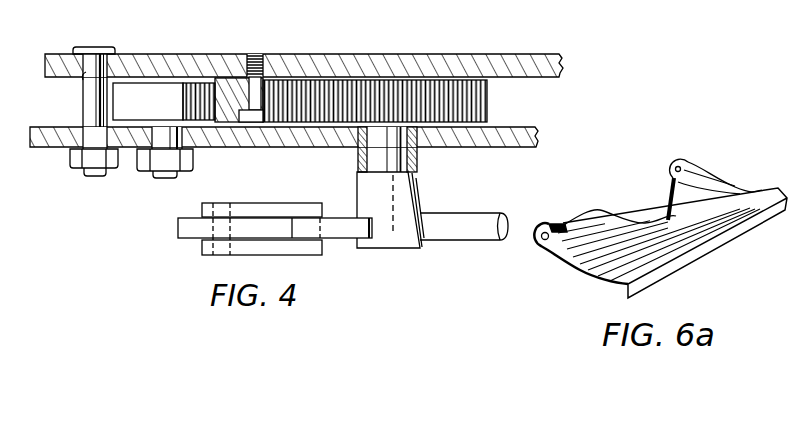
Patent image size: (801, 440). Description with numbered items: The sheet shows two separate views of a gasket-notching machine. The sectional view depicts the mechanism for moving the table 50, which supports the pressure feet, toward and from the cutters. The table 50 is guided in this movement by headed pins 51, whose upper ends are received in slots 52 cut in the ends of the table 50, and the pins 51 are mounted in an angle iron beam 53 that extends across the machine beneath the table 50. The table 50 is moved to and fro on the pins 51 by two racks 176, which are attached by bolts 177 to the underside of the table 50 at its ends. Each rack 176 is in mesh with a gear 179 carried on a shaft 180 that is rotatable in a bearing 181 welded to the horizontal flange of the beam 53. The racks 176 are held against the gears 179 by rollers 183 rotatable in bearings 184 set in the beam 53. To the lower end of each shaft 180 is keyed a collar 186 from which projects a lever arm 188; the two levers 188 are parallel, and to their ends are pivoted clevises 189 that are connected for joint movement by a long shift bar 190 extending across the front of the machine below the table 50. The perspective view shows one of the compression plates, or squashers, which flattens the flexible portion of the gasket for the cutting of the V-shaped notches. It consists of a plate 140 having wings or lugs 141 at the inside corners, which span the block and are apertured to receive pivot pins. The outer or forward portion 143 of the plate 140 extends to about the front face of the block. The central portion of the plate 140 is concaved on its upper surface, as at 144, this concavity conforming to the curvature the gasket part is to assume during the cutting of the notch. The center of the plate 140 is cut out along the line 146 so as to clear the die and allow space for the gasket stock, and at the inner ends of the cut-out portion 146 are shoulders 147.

In FIG. 4, the table 50 is at (474, 53).
In FIG. 4, the headed pins 51 is at (100, 52).
In FIG. 4, the slots 52 is at (86, 72).
In FIG. 4, the angle iron beam 53 is at (270, 142).
In FIG. 4, the racks 176 is at (230, 88).
In FIG. 4, the bolts 177 is at (252, 56).
In FIG. 4, the gear 179 is at (485, 107).
In FIG. 4, the shaft 180 is at (397, 160).
In FIG. 4, the bearing 181 is at (357, 157).
In FIG. 4, the rollers 183 is at (152, 88).
In FIG. 4, the bearings 184 is at (190, 147).
In FIG. 4, the collar 186 is at (423, 193).
In FIG. 4, the lever arm 188 is at (193, 233).
In FIG. 4, the clevises 189 is at (273, 208).
In FIG. 4, the shift bar 190 is at (452, 235).
In FIG. 6a, the plate 140 is at (560, 260).
In FIG. 6a, the wings or lugs 141 is at (543, 227).
In FIG. 6a, the outer or forward portion 143 is at (700, 233).
In FIG. 6a, the concaved upper surface 144 is at (713, 183).
In FIG. 6a, the cut-out line 146 is at (665, 220).
In FIG. 6a, the shoulders 147 is at (590, 210).